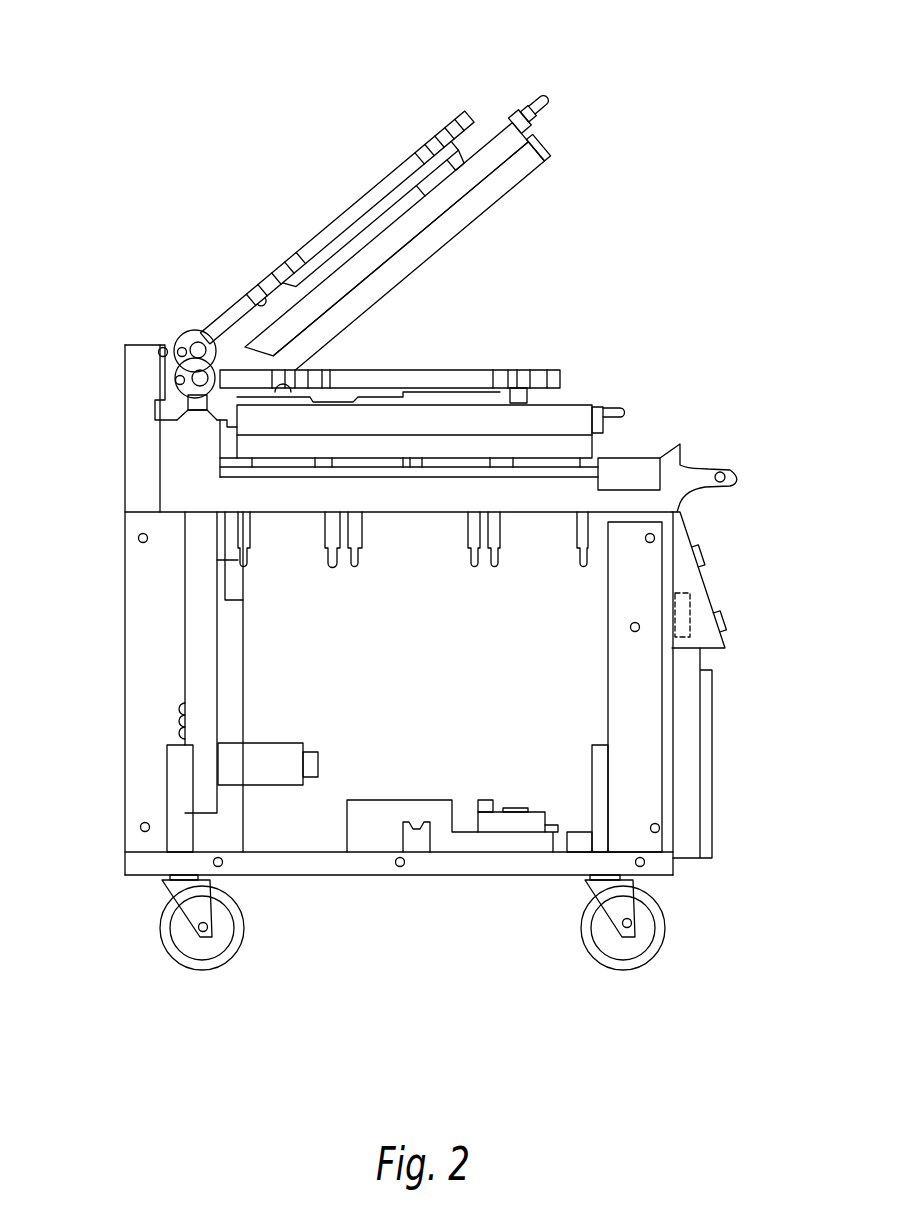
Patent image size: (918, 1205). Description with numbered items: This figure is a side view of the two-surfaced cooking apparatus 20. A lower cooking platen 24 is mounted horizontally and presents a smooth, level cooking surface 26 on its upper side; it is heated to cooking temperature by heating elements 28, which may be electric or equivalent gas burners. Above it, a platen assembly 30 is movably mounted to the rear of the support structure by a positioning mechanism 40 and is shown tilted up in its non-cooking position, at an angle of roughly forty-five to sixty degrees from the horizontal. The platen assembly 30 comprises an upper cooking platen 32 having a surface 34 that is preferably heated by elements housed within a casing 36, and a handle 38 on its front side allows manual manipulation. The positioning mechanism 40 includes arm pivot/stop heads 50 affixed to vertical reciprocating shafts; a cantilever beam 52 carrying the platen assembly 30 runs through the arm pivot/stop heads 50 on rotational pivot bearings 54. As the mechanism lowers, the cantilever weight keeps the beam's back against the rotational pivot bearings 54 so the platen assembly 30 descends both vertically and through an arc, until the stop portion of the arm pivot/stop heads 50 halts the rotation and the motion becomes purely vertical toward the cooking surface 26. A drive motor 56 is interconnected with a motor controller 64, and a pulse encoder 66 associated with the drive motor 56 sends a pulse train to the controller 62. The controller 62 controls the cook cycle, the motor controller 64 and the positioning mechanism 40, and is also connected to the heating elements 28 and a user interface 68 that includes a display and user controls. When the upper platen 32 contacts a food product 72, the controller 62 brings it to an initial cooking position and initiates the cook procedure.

The cooking apparatus 20 is at (172, 157).
The lower cooking platen 24 is at (548, 463).
The cooking surface 26 is at (597, 460).
The heating elements 28 is at (362, 545).
The platen assembly 30 is at (420, 102).
The upper cooking platen 32 is at (546, 146).
The surface 34 is at (513, 183).
The casing 36 is at (495, 147).
The handle 38 is at (548, 97).
The positioning mechanism 40 is at (152, 703).
The arm pivot/stop heads 50 is at (178, 333).
The cantilever beam 52 is at (367, 193).
The rotational pivot bearings 54 is at (162, 342).
The drive motor 56 is at (283, 748).
The controller 62 is at (690, 612).
The motor controller 64 is at (530, 825).
The pulse encoder 66 is at (318, 763).
The user interface 68 is at (690, 542).
The food product 72 is at (537, 460).